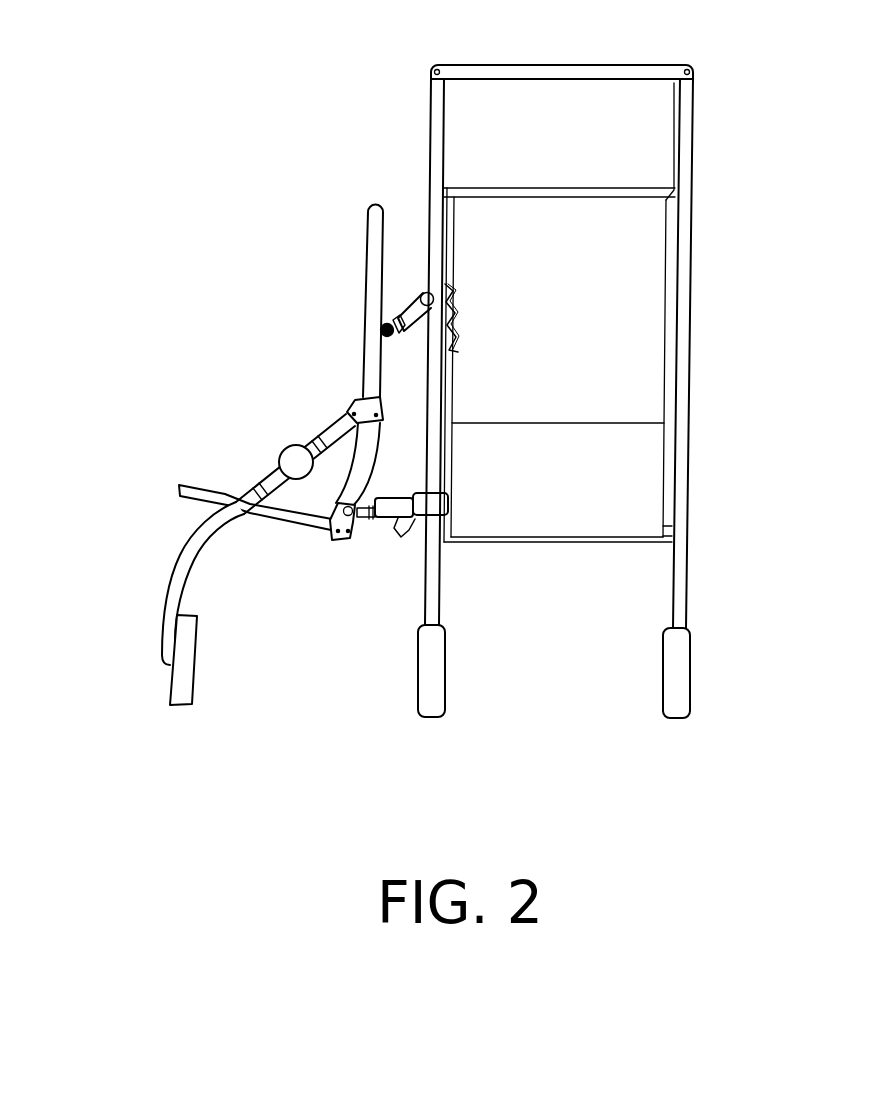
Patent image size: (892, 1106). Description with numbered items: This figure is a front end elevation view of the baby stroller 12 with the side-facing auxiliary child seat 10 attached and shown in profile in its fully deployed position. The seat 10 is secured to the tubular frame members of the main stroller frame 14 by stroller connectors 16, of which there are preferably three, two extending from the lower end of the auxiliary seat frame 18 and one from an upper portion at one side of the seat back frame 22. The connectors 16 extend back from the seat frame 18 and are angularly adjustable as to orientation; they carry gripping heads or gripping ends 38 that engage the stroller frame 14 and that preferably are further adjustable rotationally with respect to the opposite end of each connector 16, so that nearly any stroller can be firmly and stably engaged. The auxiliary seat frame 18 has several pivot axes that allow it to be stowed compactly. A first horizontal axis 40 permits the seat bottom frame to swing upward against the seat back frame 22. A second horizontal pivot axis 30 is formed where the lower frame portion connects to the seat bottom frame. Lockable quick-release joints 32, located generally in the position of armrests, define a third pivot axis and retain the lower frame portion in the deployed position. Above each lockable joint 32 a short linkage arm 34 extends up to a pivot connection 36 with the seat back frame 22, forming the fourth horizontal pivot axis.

The side-facing child seat 10 is at (220, 288).
The stroller 12 is at (717, 311).
The frame 14 is at (438, 97).
The connectors 16 is at (409, 310).
The seat frame 18 is at (150, 538).
The seat back frame 22 is at (372, 223).
The pivot connection 30 is at (248, 516).
The lockable joints 32 is at (293, 452).
The short linkage arm 34 is at (343, 420).
The pivot connection 36 is at (343, 397).
The gripping ends 38 is at (448, 287).
The first horizontal axis 40 is at (345, 541).